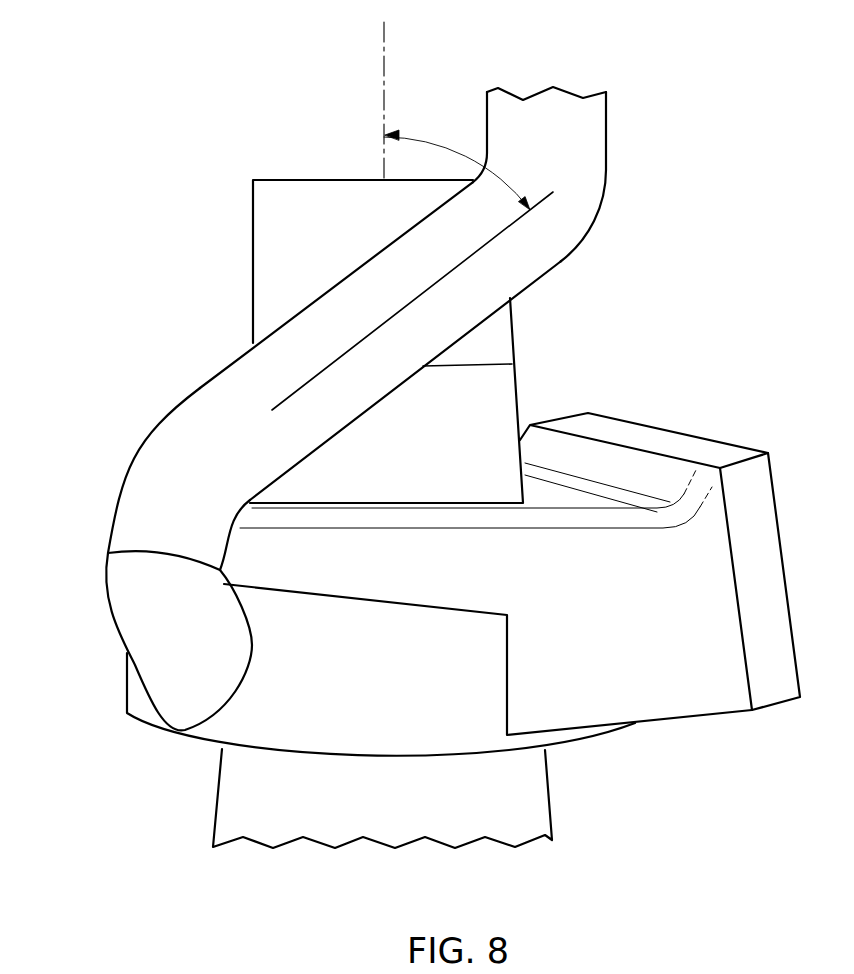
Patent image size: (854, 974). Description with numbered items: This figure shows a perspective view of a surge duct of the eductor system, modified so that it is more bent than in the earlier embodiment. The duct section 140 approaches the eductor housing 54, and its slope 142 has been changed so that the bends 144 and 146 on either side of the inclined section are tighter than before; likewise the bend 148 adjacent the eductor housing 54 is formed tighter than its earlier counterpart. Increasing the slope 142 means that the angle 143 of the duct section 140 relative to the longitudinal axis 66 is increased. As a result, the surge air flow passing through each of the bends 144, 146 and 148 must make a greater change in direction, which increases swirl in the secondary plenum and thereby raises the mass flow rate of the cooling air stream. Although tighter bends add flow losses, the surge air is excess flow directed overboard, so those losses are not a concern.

The longitudinal axis 66 is at (384, 34).
The angle 143 is at (420, 138).
The bend 144 is at (604, 190).
The slope 142 is at (460, 262).
The duct section 140 is at (230, 415).
The bend 146 is at (110, 532).
The bend 148 is at (112, 627).
The eductor housing 54 is at (282, 727).